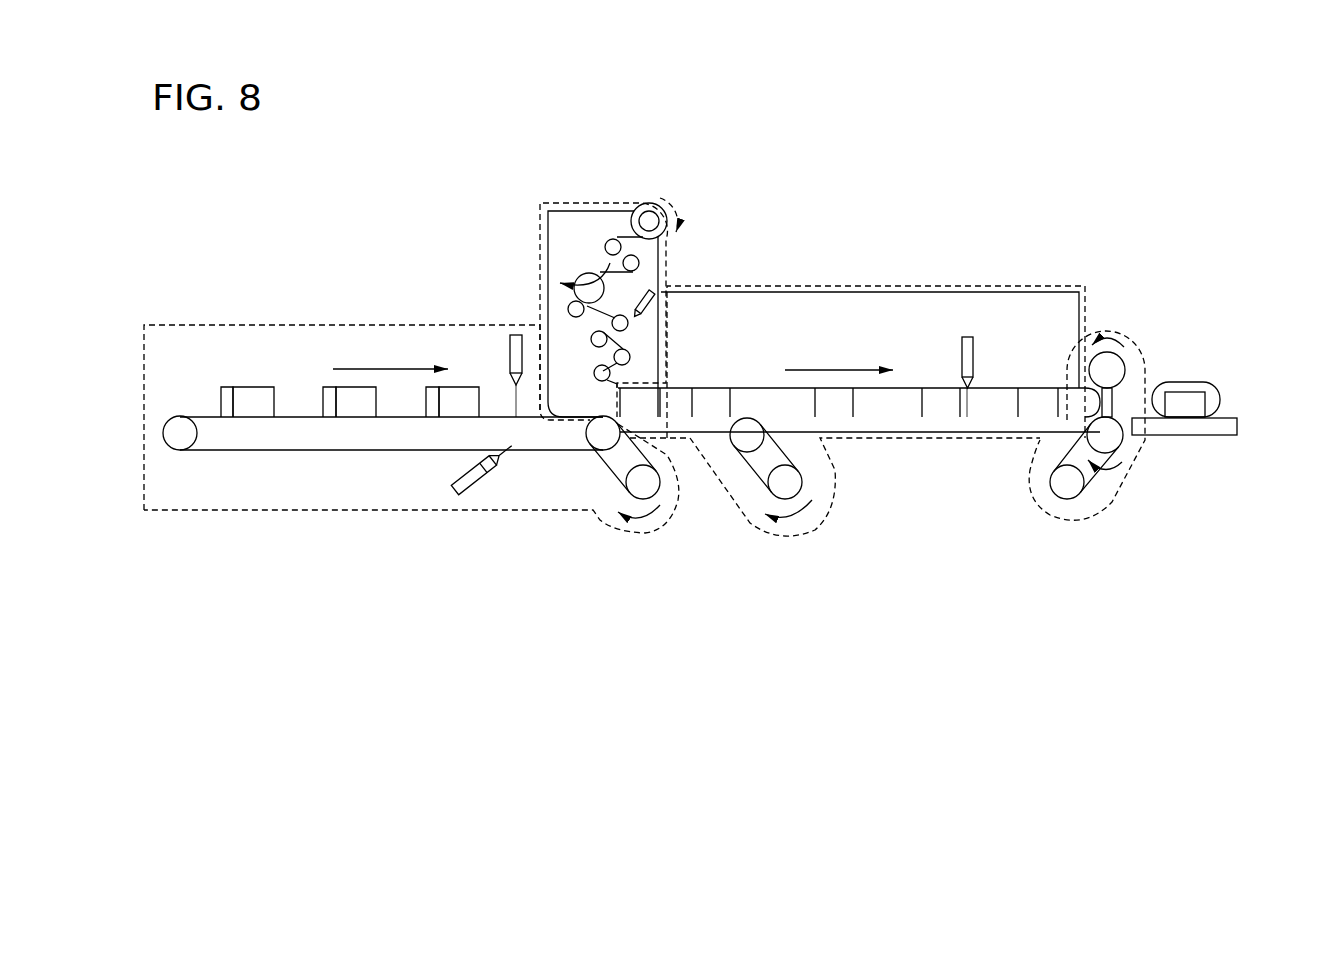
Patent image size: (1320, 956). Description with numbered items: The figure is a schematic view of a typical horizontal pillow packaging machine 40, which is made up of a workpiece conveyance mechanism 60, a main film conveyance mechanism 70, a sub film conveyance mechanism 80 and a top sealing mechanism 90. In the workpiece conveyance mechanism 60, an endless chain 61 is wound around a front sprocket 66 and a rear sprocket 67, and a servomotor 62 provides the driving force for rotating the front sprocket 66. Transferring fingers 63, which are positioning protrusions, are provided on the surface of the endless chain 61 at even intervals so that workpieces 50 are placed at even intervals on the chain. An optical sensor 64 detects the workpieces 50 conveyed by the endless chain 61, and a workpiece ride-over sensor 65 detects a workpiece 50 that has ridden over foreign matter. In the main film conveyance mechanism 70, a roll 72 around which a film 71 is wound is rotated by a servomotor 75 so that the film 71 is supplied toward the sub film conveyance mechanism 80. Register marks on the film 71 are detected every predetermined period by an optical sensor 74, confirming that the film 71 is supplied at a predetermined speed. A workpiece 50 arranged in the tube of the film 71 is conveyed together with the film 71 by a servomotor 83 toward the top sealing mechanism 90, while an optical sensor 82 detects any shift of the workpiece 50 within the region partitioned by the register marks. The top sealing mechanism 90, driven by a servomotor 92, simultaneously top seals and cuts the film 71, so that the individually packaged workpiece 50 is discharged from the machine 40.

The horizontal pillow packaging machine 40 is at (853, 220).
The workpiece 50 is at (256, 387).
The workpiece conveyance mechanism 60 is at (294, 513).
The endless chain 61 is at (395, 452).
The servomotor 62 is at (626, 493).
The transferring finger 63 is at (227, 387).
The optical sensor 64 is at (476, 488).
The workpiece ride-over sensor 65 is at (510, 345).
The front sprocket 66 is at (596, 441).
The rear sprocket 67 is at (184, 441).
The film conveyance mechanism (main) 70 is at (580, 203).
The film 71 is at (612, 262).
The roll 72 is at (648, 203).
The optical sensor 74 is at (651, 292).
The servomotor 75 is at (575, 293).
The film conveyance mechanism (sub) 80 is at (1034, 286).
The optical sensor 82 is at (962, 345).
The servomotor 83 is at (803, 483).
The top sealing mechanism 90 is at (1102, 335).
The servomotor 92 is at (1050, 482).